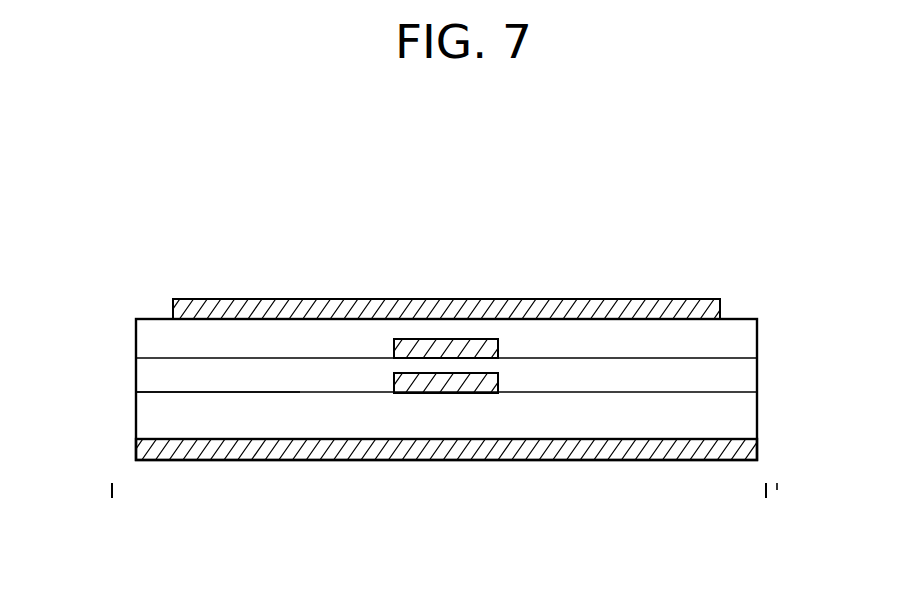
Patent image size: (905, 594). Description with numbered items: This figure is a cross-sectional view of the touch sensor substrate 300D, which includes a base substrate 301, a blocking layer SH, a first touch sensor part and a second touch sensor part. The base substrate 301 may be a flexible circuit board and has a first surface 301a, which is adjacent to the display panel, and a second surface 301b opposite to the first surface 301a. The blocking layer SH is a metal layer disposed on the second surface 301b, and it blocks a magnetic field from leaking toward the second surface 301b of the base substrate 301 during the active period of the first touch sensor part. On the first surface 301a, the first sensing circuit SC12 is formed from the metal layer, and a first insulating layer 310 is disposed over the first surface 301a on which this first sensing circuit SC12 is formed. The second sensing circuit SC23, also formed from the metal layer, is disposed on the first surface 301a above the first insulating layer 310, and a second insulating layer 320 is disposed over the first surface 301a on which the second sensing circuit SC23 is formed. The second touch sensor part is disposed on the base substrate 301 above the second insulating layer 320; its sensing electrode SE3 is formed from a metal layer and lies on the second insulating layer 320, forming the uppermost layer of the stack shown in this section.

The touch sensor substrate 300D is at (488, 238).
The second insulating layer 320 is at (751, 338).
The first insulating layer 310 is at (751, 377).
The base substrate 301 is at (751, 427).
The first surface 301a is at (149, 392).
The second surface 301b is at (149, 439).
The sensing electrode SE3 is at (593, 298).
The blocking layer SH is at (585, 456).
The second sensing circuit SC23 is at (400, 351).
The first sensing circuit SC12 is at (443, 383).